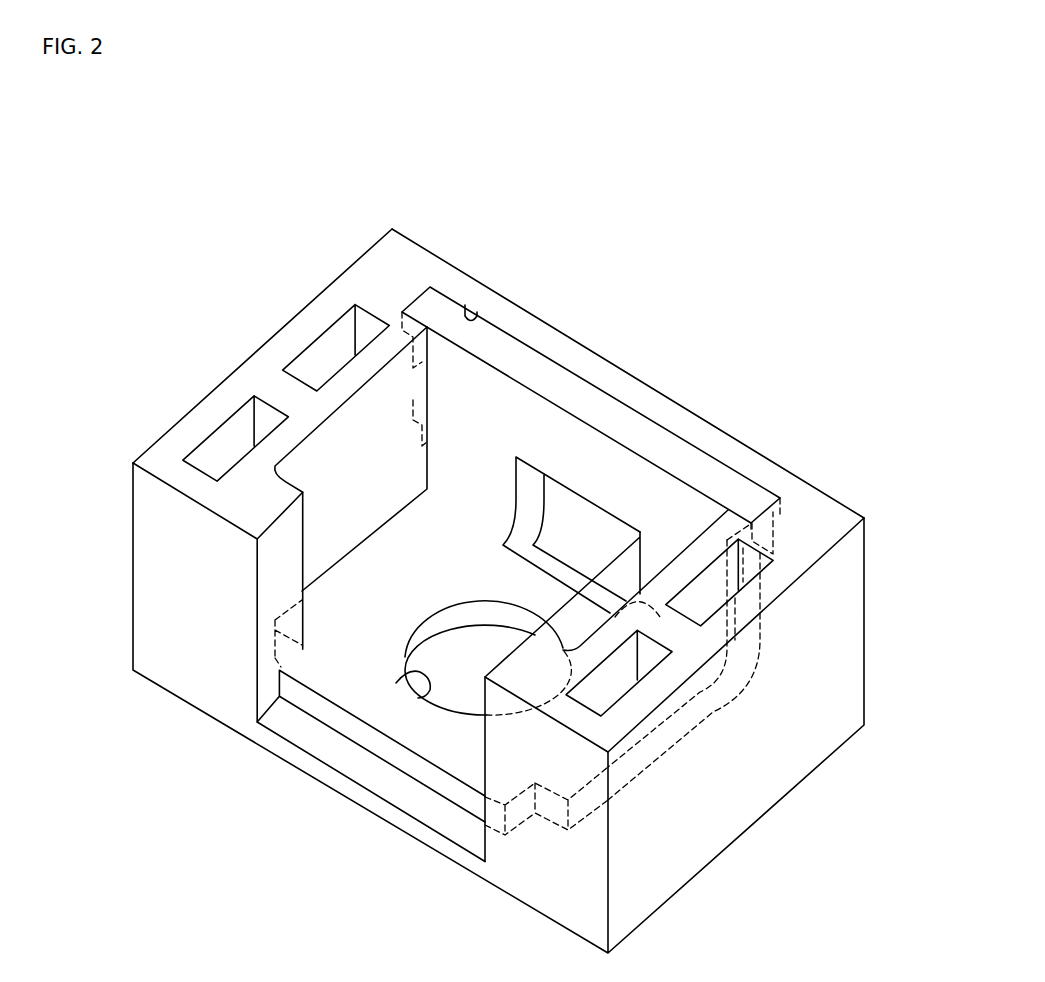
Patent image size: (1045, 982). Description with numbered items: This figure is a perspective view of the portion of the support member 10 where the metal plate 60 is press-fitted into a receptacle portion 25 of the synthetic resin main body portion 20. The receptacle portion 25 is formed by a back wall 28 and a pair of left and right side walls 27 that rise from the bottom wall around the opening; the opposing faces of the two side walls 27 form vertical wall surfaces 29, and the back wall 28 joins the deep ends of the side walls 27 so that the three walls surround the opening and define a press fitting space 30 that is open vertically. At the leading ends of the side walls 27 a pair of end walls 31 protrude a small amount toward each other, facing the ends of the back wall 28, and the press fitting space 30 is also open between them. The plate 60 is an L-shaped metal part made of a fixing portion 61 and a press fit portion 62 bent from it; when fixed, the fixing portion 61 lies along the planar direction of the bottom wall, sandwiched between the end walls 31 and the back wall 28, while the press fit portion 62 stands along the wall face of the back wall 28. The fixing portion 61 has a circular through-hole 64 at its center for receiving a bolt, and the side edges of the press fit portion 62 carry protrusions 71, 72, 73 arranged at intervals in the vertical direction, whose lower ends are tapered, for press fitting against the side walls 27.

The support member 10 is at (568, 171).
The main body portion 20 is at (865, 622).
The receptacle portion 25 is at (401, 240).
The side walls 27 is at (247, 378).
The back wall 28 is at (578, 350).
The wall surfaces 29 is at (322, 467).
The press fitting space 30 is at (465, 302).
The end walls 31 is at (238, 695).
The plate 60 is at (638, 412).
The fixing portion 61 is at (417, 770).
The press fit portion 62 is at (527, 358).
The through-hole 64 is at (396, 683).
The protrusion 71 is at (425, 430).
The protrusion 72 is at (422, 368).
The protrusion 73 is at (419, 298).